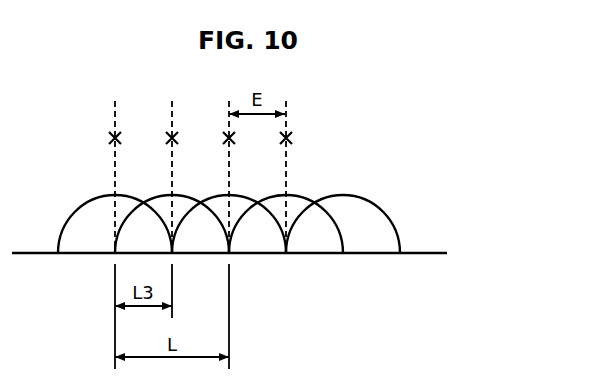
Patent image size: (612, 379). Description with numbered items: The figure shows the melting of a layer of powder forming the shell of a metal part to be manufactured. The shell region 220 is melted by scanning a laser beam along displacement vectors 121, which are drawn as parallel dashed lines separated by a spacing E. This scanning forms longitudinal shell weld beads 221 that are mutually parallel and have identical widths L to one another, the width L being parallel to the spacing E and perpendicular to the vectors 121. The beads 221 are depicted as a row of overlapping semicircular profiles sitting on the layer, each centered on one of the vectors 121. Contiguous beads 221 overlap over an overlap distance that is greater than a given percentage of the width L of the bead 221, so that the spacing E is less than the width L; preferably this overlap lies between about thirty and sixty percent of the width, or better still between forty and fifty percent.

The displacement vectors 121 is at (118, 138).
The shell region 220 is at (356, 178).
The shell weld beads 221 is at (358, 232).